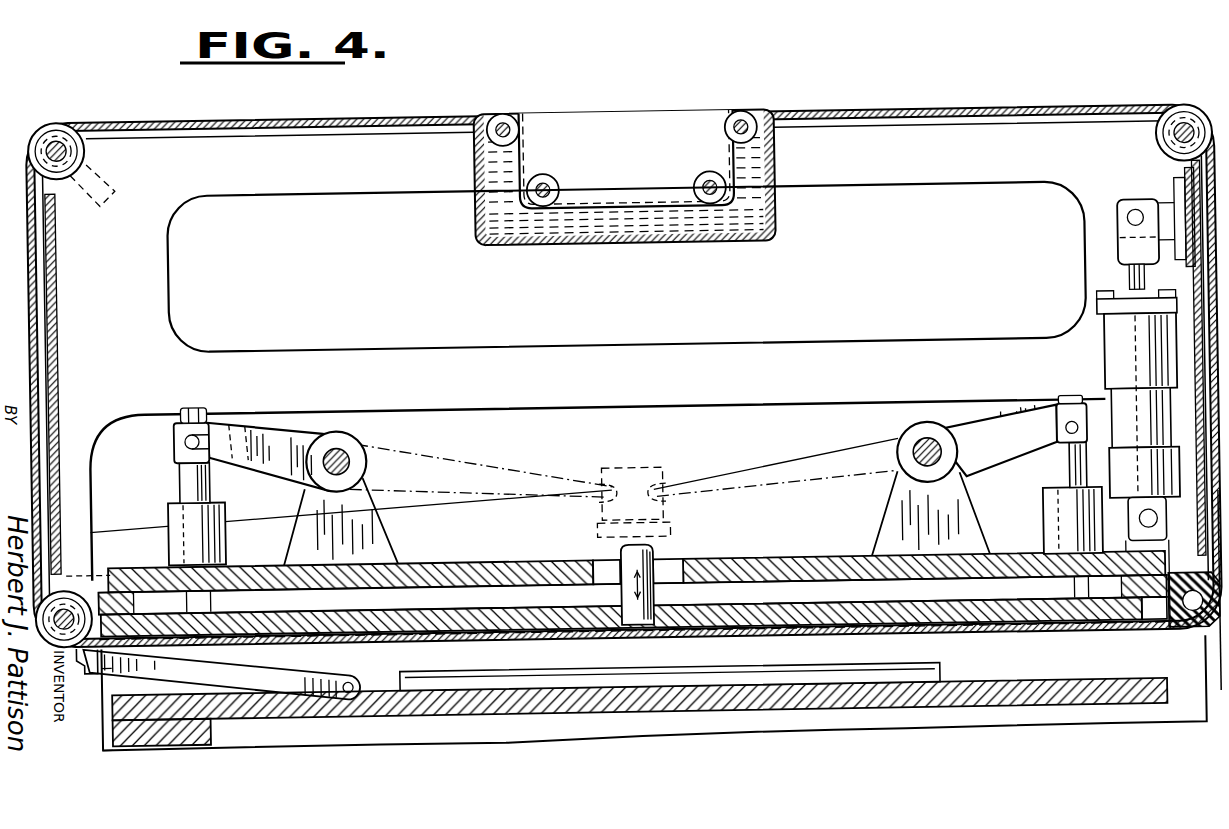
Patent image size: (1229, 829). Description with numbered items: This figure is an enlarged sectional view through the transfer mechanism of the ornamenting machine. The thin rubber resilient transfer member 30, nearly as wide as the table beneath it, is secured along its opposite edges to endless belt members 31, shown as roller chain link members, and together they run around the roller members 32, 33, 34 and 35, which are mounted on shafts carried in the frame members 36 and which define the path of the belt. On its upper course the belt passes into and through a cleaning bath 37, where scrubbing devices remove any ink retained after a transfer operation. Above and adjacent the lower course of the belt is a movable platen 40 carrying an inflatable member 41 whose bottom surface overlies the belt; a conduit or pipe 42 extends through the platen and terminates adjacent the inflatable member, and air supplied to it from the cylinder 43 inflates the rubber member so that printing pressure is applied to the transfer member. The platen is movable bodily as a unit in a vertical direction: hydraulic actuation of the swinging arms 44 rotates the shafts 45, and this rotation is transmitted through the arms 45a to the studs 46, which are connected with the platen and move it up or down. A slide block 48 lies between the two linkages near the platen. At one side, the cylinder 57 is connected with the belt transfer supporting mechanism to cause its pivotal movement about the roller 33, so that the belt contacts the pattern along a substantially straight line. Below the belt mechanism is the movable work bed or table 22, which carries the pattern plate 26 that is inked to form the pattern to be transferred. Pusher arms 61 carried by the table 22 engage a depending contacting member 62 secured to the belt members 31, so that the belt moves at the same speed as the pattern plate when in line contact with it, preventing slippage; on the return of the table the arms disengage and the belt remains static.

The movable work bed or table 22 is at (1042, 712).
The pattern element plate 26 is at (860, 688).
The resilient transfer member 30 is at (36, 298).
The endless belt members 31 is at (94, 580).
The roller member 32 is at (72, 596).
The roller member 33 is at (1190, 582).
The roller member 34 is at (1182, 114).
The roller member 35 is at (70, 115).
The frame members 36 is at (170, 312).
The cleaning bath 37 is at (779, 228).
The movable platen 40 is at (440, 562).
The inflatable member 41 is at (690, 624).
The conduit or pipe 42 is at (645, 556).
The cylinder 43 is at (922, 430).
The swinging arms 44 is at (432, 444).
The shafts 45 is at (340, 432).
The arms 45a is at (258, 424).
The studs 46 is at (186, 470).
The slide block 48 is at (641, 469).
The cylinder 57 is at (1105, 350).
The pusher arms 61 is at (243, 680).
The depending contacting member 62 is at (86, 658).